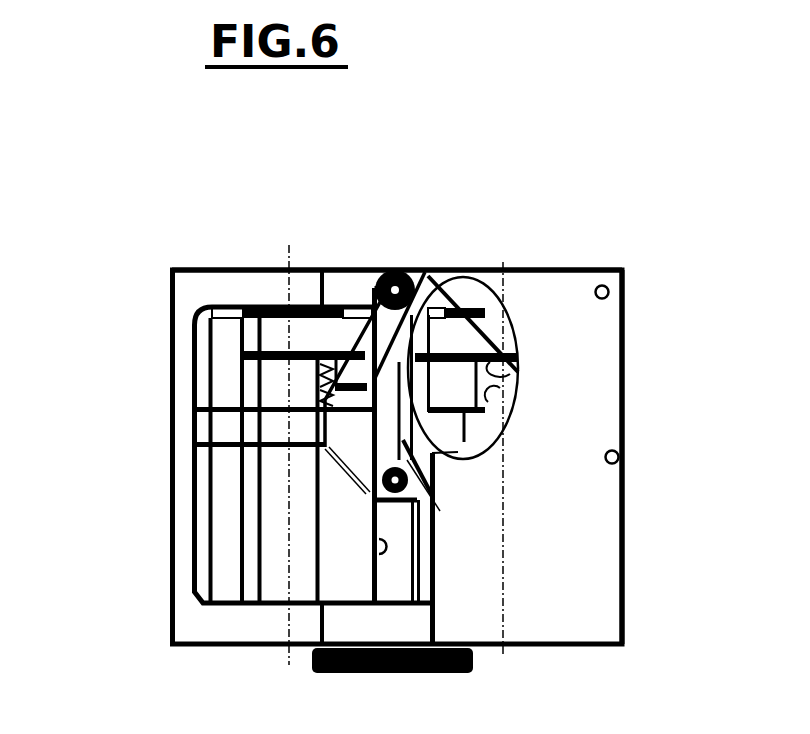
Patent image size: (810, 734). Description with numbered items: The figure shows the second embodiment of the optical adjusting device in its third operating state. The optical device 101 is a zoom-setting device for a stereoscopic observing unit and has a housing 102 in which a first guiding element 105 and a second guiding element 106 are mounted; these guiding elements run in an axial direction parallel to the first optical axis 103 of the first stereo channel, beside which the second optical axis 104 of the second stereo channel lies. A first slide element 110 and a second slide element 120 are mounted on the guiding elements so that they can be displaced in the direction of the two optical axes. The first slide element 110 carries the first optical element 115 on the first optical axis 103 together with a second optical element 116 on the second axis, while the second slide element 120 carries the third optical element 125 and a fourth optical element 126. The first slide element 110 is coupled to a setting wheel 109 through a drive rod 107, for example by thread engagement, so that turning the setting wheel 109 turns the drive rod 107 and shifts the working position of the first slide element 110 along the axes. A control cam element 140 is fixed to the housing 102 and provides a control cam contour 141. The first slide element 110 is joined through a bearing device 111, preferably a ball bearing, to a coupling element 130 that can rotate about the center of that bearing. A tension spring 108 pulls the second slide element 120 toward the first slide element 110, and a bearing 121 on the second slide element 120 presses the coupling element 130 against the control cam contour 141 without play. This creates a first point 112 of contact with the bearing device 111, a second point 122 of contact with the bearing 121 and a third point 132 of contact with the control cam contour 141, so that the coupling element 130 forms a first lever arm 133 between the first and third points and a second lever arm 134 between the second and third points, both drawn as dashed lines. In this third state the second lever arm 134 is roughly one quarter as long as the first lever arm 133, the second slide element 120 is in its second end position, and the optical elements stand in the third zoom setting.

The optical device 101 is at (177, 197).
The housing 102 is at (170, 292).
The first optical axis 103 is at (290, 252).
The second optical axis 104 is at (502, 263).
The first guiding element 105 is at (380, 548).
The second guiding element 106 is at (373, 583).
The drive rod 107 is at (378, 557).
The tension spring 108 is at (292, 388).
The setting wheel 109 is at (312, 657).
The first slide element 110 is at (230, 436).
The bearing device 111 is at (395, 500).
The first point 112 is at (440, 514).
The first optical element 115 is at (250, 395).
The second optical element 116 is at (492, 400).
The second slide element 120 is at (195, 325).
The bearing 121 is at (387, 267).
The second point 122 is at (428, 335).
The third optical element 125 is at (255, 377).
The fourth optical element 126 is at (515, 373).
The coupling element 130 is at (380, 465).
The third point 132 is at (470, 278).
The first lever arm 133 is at (437, 485).
The second lever arm 134 is at (422, 267).
The control cam element 140 is at (595, 593).
The control cam contour 141 is at (470, 455).